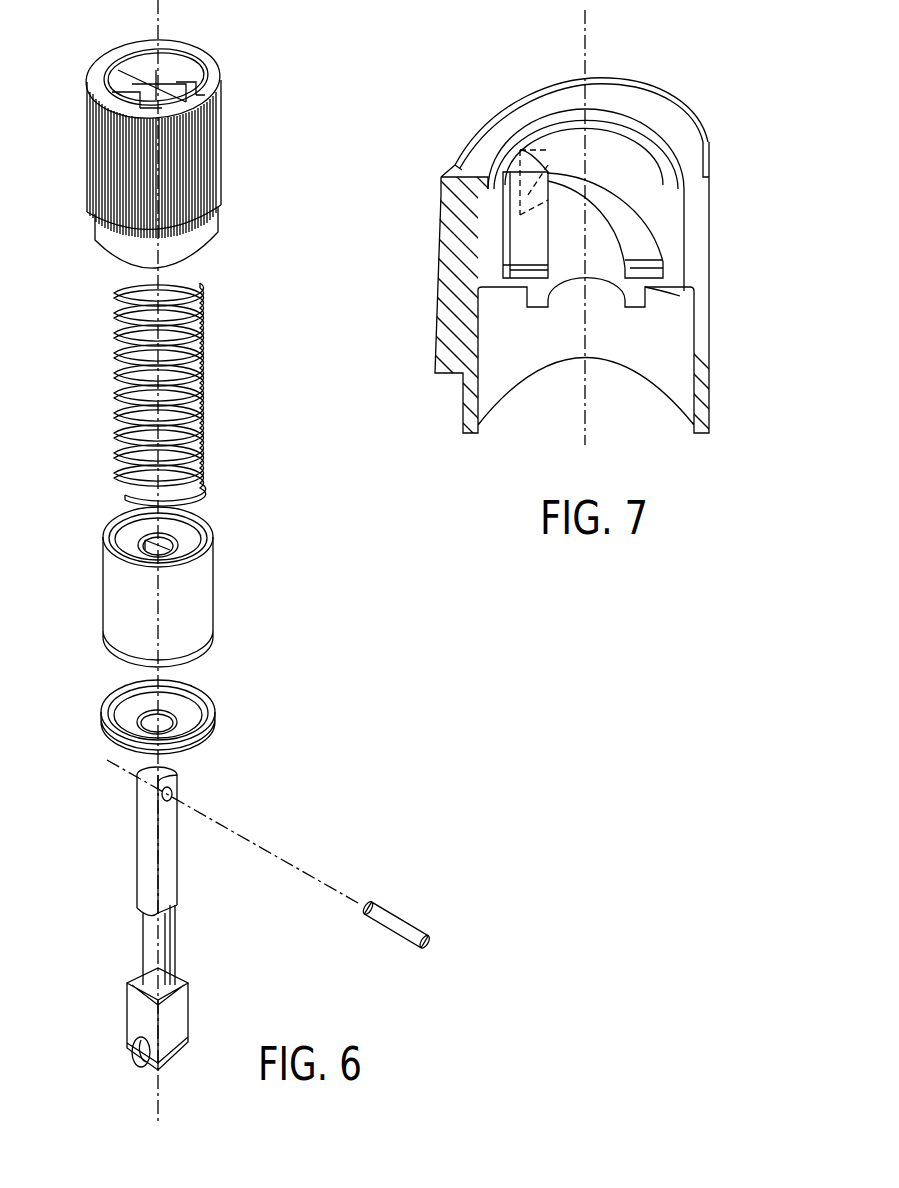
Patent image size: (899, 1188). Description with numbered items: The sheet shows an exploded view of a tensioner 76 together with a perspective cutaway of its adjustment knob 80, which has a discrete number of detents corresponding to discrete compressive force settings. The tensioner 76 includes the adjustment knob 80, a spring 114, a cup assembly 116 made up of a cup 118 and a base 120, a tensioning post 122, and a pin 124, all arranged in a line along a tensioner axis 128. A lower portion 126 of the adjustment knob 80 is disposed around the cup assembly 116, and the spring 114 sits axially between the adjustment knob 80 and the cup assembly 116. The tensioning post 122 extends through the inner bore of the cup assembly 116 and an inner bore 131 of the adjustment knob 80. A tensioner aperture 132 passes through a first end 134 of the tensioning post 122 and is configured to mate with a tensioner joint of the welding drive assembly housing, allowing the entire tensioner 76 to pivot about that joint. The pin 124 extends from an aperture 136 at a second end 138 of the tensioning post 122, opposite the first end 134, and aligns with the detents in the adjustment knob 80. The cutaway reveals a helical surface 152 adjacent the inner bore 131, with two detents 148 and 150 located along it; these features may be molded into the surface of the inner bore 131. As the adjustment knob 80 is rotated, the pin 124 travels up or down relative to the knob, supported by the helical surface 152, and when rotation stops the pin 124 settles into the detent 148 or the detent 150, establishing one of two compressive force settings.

In FIG. 6, the tensioner 76 is at (260, 320).
In FIG. 6, the adjustment knob 80 is at (170, 131).
In FIG. 6, the spring 114 is at (114, 351).
In FIG. 6, the cup assembly 116 is at (163, 578).
In FIG. 6, the cup 118 is at (213, 588).
In FIG. 6, the base 120 is at (144, 707).
In FIG. 6, the tensioning post 122 is at (152, 876).
In FIG. 6, the pin 124 is at (401, 920).
In FIG. 6, the lower portion of the adjustment knob 126 is at (104, 250).
In FIG. 7, the lower portion of the adjustment knob 126 is at (463, 403).
In FIG. 6, the tensioner axis 128 is at (160, 1100).
In FIG. 7, the tensioner axis 128 is at (584, 46).
In FIG. 6, the inner bore of the adjustment knob 131 is at (131, 60).
In FIG. 7, the inner bore of the adjustment knob 131 is at (528, 237).
In FIG. 6, the tensioner aperture 132 is at (138, 1051).
In FIG. 6, the first end of the tensioning post 134 is at (175, 1023).
In FIG. 6, the aperture 136 is at (170, 798).
In FIG. 6, the second end of the tensioning post 138 is at (206, 763).
In FIG. 7, the detent 148 is at (650, 286).
In FIG. 7, the detent 150 is at (545, 200).
In FIG. 7, the helical surface 152 is at (610, 190).